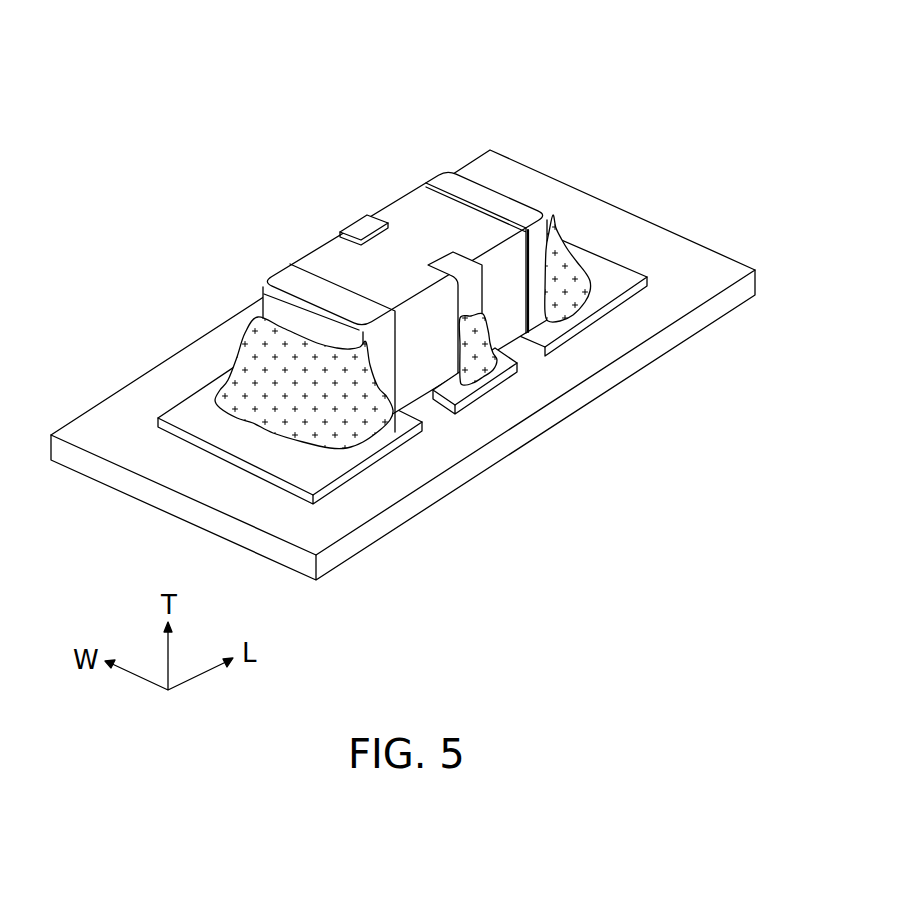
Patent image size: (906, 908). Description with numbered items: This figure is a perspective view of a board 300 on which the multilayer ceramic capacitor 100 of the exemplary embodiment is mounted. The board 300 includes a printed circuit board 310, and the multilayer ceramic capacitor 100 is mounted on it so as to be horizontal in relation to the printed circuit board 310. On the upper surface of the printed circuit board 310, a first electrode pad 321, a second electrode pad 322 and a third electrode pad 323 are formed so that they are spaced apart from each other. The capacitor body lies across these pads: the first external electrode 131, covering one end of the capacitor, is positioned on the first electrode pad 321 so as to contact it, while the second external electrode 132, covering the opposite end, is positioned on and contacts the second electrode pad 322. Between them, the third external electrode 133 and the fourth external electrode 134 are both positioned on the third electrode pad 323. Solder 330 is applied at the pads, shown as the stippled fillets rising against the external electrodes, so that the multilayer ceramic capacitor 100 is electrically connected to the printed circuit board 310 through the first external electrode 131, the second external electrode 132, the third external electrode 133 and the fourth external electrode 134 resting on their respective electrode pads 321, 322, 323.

The multilayer ceramic capacitor 100 is at (458, 266).
The first external electrode 131 is at (287, 282).
The second external electrode 132 is at (453, 183).
The third external electrode 133 is at (478, 292).
The fourth external electrode 134 is at (363, 227).
The board 300 is at (403, 385).
The printed circuit board 310 is at (483, 465).
The first electrode pad 321 is at (350, 470).
The second electrode pad 322 is at (623, 297).
The third electrode pad 323 is at (487, 385).
The solder 330 is at (565, 268).